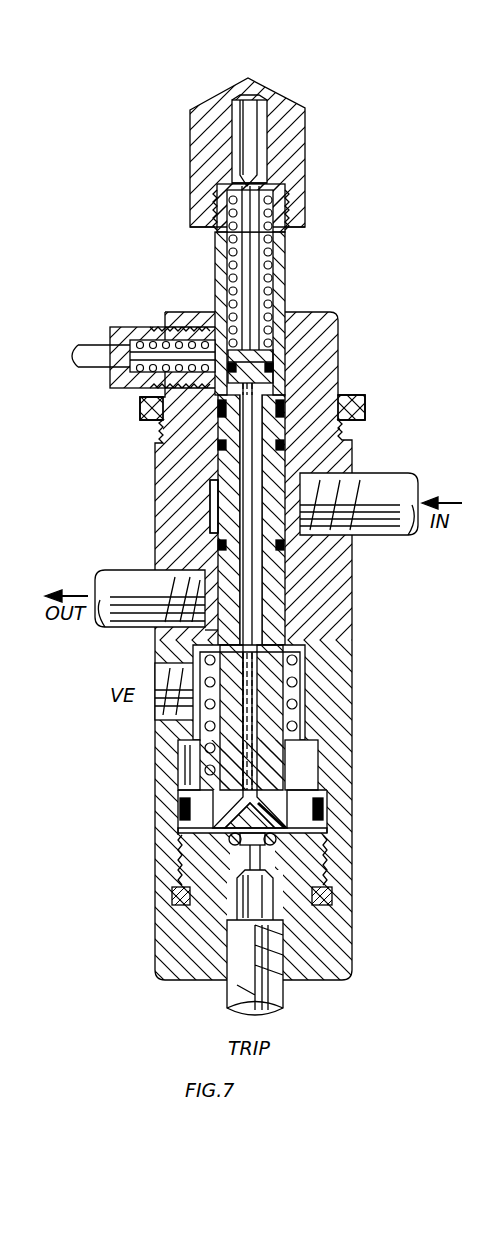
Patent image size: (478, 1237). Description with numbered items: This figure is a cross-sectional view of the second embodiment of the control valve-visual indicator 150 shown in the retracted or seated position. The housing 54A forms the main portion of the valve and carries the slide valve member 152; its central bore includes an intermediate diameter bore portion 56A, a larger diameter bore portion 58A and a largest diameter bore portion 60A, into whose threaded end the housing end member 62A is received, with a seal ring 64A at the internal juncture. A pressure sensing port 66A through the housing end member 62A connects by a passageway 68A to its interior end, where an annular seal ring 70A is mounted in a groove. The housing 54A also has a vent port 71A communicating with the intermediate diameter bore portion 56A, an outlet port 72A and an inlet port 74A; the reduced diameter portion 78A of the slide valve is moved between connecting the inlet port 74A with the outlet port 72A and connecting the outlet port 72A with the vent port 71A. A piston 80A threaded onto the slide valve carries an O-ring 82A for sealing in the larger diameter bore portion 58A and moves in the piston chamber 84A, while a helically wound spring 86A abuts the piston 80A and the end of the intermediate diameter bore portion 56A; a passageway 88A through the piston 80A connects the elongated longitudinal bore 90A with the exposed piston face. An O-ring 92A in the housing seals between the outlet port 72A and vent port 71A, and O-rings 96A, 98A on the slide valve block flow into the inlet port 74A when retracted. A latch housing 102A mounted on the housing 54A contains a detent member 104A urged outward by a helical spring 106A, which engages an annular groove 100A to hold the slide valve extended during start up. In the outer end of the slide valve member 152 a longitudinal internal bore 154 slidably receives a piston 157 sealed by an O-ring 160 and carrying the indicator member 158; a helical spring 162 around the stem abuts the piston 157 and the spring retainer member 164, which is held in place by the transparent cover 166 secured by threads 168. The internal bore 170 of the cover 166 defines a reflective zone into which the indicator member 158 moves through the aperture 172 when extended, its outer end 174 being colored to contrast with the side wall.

The control valve-visual indicator 150 is at (196, 66).
The housing 54A is at (313, 323).
The intermediate diameter bore portion 56A is at (302, 655).
The larger diameter bore portion 58A is at (315, 750).
The largest diameter bore portion 60A is at (325, 825).
The housing end member 62A is at (330, 927).
The seal ring 64A is at (170, 897).
The pressure sensing port 66A is at (246, 963).
The passageway 68A is at (267, 852).
The annular seal ring 70A is at (230, 838).
The vent port 71A is at (170, 697).
The outlet port 72A is at (168, 588).
The inlet port 74A is at (323, 500).
The reduced diameter portion 78A is at (270, 605).
The piston 80A is at (205, 797).
The O-ring 82A is at (178, 812).
The piston chamber 84A is at (190, 762).
The helically wound spring 86A is at (290, 682).
The passageway 88A is at (318, 788).
The elongated longitudinal bore 90A is at (252, 395).
The O-ring 92A is at (210, 634).
The O-ring 96A is at (218, 543).
The O-ring 98A is at (215, 450).
The annular groove 100A is at (160, 410).
The latch housing 102A is at (120, 340).
The detent member 104A is at (145, 337).
The helical spring 106A is at (128, 380).
The slide valve member 152 is at (205, 295).
The longitudinal internal bore 154 is at (268, 255).
The piston 157 is at (267, 363).
The indicator member 158 is at (250, 233).
The O-ring 160 is at (252, 367).
The helical spring 162 is at (230, 270).
The spring retainer member 164 is at (217, 190).
The transparent cover 166 is at (307, 142).
The threads 168 is at (205, 217).
The internal bore 170 is at (262, 128).
The aperture 172 is at (268, 170).
The outer end 174 is at (247, 187).